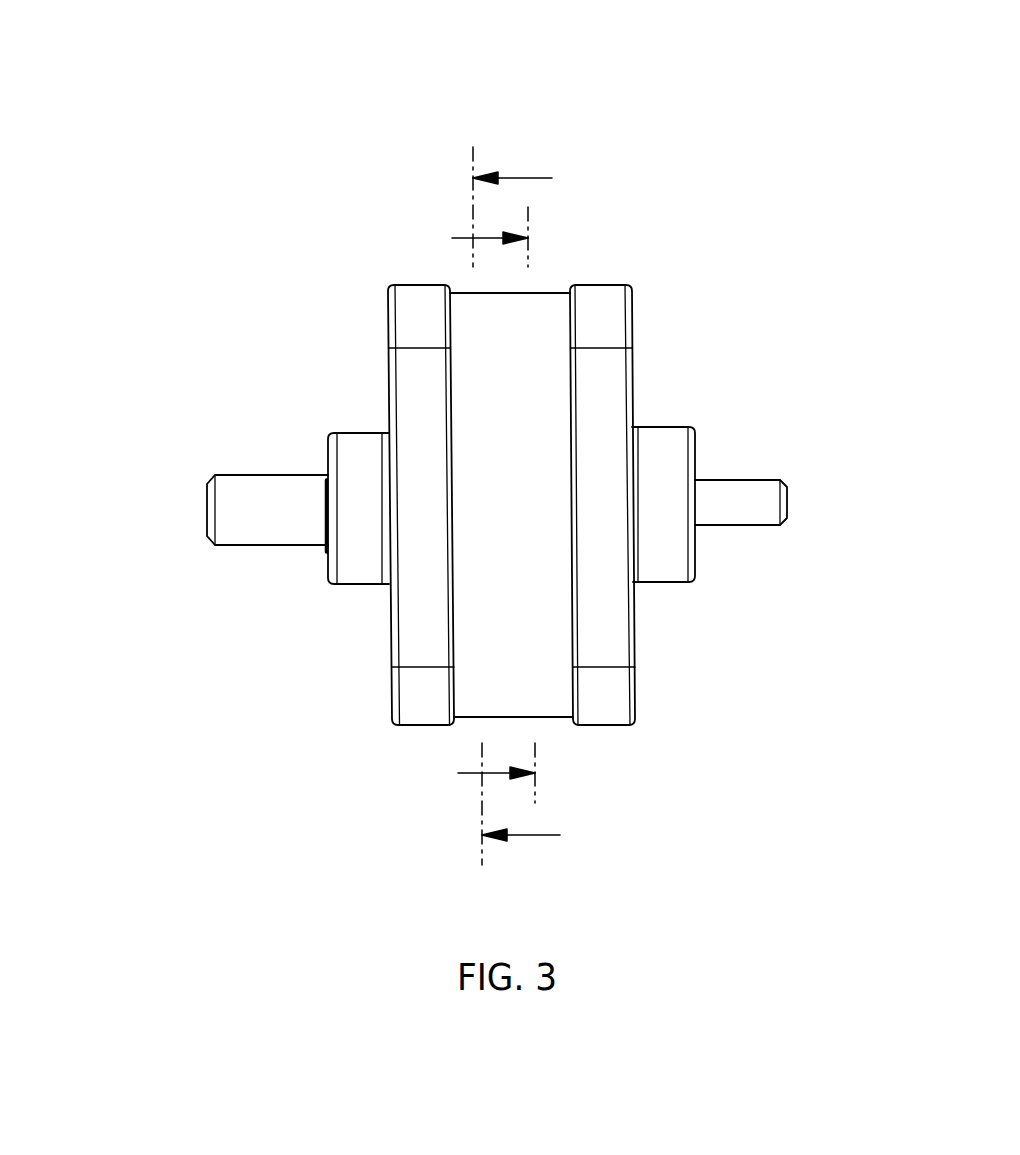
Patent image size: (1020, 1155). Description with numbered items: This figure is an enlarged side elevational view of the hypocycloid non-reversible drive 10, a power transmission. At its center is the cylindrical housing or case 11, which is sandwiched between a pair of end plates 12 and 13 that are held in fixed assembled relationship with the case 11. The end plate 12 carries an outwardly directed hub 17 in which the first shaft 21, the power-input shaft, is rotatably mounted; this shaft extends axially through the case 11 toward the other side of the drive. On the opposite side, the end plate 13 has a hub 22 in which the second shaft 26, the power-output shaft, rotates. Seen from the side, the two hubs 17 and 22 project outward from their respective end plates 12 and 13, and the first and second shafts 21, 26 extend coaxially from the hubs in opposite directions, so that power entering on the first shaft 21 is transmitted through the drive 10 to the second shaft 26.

The hypocycloid non-reversible drive 10 is at (486, 508).
The cylindrical housing or case 11 is at (522, 489).
The end plate 12 is at (604, 474).
The end plate 13 is at (425, 385).
The hub 17 is at (660, 533).
The first shaft 21 is at (725, 508).
The hub 22 is at (366, 472).
The second shaft 26 is at (277, 502).